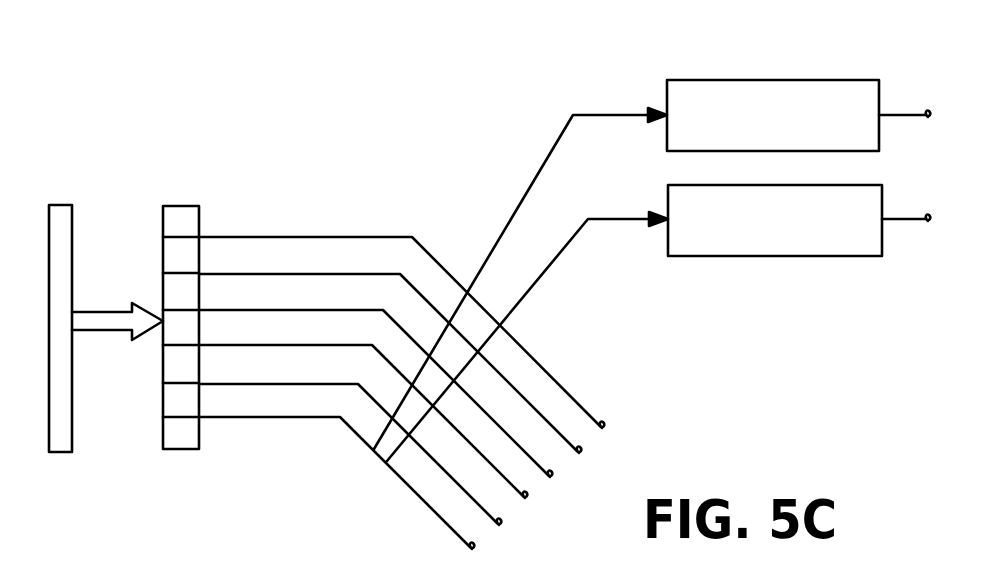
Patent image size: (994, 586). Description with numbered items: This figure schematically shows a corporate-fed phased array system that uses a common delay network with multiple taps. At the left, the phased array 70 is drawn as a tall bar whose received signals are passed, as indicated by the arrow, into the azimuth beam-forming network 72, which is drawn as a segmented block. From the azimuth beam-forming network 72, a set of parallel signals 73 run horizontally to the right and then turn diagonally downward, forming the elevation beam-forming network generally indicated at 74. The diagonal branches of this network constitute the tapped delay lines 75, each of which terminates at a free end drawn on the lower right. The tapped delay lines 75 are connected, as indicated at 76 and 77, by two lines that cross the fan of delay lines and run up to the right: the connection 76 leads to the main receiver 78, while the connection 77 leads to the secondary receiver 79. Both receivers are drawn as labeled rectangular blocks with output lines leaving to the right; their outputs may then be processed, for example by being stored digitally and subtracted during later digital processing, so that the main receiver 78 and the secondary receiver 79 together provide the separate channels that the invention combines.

The phased array 70 is at (62, 203).
The azimuth beam-forming network 72 is at (187, 205).
The signals 73 is at (248, 272).
The elevation beam-forming network 74 is at (338, 457).
The tapped delay lines 75 is at (500, 422).
The connection to main receiver 76 is at (610, 219).
The connection to secondary receiver 77 is at (607, 115).
The main receiver 78 is at (790, 256).
The secondary receiver 79 is at (803, 80).